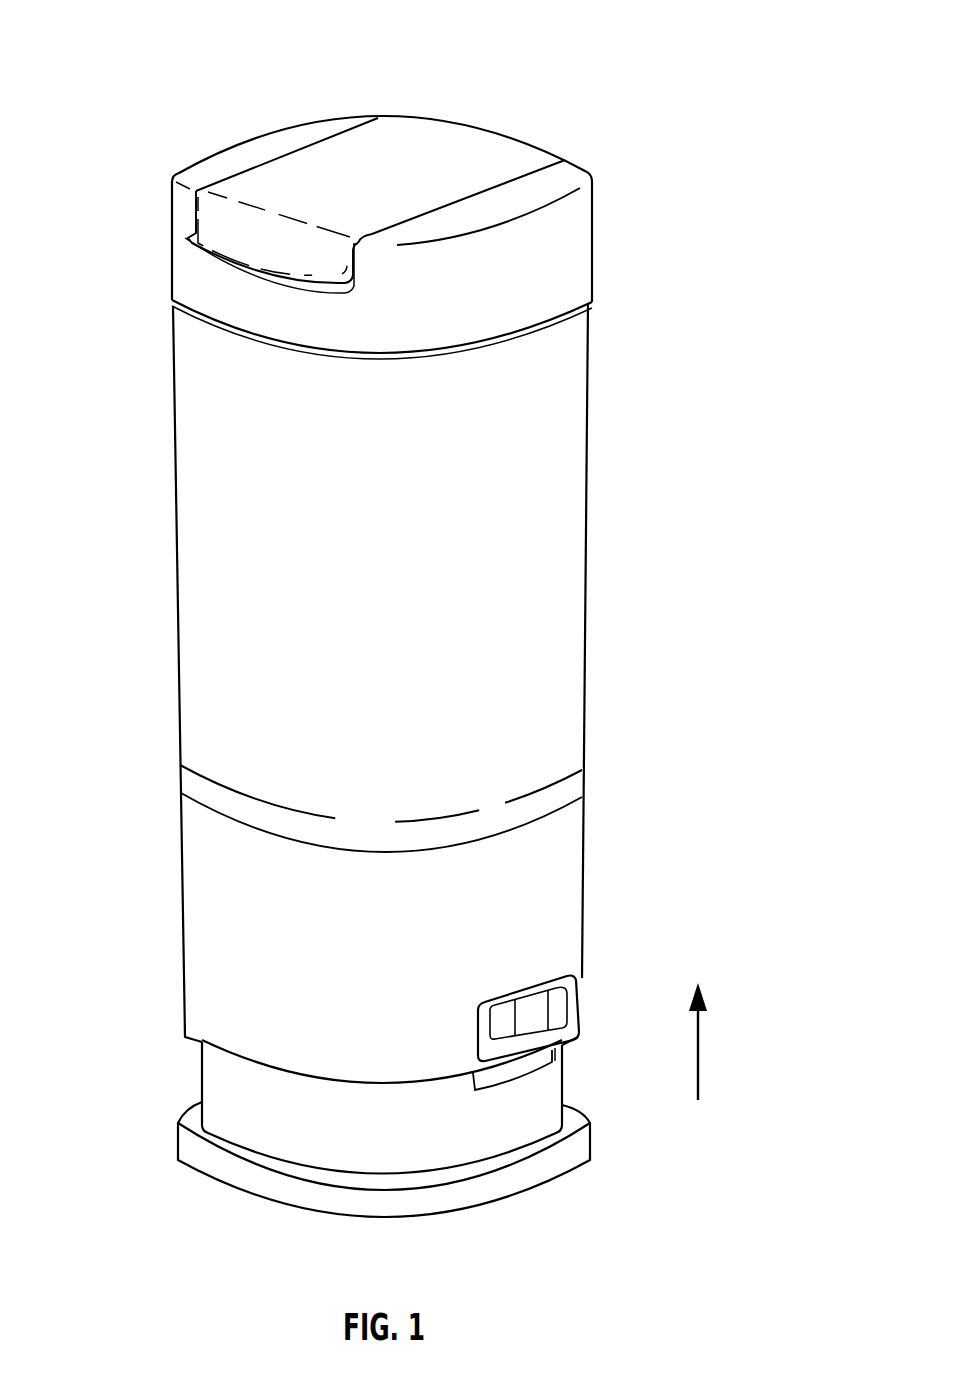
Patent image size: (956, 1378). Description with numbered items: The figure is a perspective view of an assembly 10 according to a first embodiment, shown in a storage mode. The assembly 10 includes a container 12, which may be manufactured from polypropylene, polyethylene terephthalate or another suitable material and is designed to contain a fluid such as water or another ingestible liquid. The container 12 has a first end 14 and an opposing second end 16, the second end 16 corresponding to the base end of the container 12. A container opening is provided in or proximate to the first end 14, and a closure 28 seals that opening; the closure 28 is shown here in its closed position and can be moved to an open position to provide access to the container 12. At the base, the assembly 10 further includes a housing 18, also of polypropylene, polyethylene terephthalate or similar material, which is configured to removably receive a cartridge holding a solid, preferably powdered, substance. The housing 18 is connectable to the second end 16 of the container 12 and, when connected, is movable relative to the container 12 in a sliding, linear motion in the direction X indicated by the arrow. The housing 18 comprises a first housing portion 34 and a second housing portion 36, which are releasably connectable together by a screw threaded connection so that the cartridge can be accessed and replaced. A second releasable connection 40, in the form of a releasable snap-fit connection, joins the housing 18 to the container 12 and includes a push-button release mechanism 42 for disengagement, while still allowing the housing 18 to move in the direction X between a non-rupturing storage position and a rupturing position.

The assembly 10 is at (673, 252).
The container 12 is at (218, 528).
The first end 14 is at (190, 337).
The second end 16 is at (572, 747).
The housing 18 is at (386, 1177).
The closure 28 is at (327, 180).
The first housing portion 34 is at (548, 1167).
The second housing portion 36 is at (543, 1102).
The second releasable connection 40 is at (585, 991).
The push-button release mechanism 42 is at (573, 990).